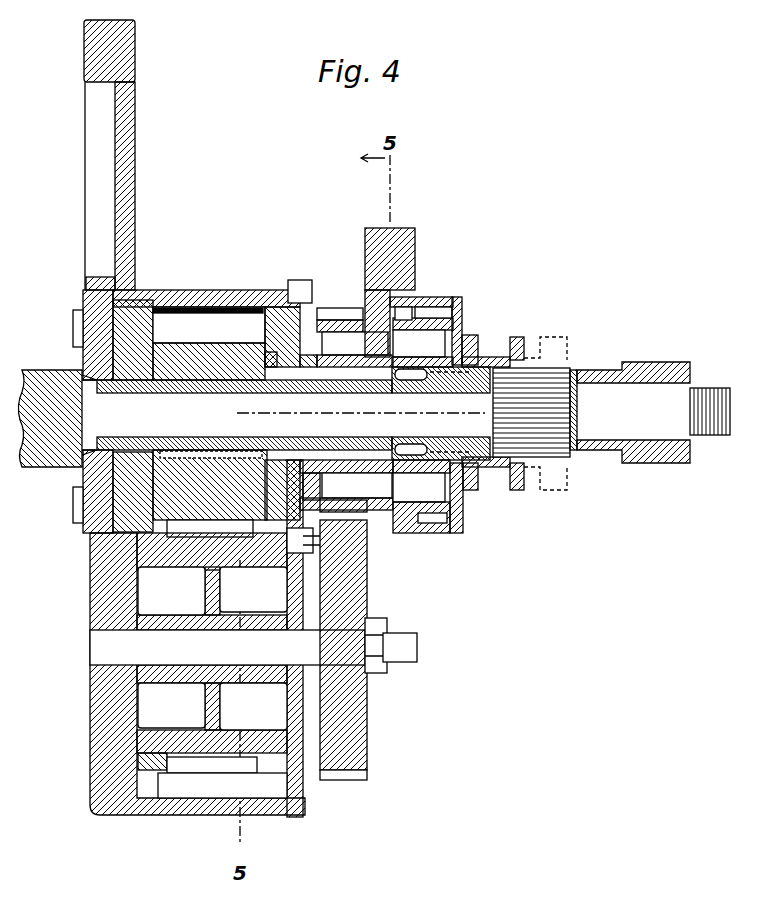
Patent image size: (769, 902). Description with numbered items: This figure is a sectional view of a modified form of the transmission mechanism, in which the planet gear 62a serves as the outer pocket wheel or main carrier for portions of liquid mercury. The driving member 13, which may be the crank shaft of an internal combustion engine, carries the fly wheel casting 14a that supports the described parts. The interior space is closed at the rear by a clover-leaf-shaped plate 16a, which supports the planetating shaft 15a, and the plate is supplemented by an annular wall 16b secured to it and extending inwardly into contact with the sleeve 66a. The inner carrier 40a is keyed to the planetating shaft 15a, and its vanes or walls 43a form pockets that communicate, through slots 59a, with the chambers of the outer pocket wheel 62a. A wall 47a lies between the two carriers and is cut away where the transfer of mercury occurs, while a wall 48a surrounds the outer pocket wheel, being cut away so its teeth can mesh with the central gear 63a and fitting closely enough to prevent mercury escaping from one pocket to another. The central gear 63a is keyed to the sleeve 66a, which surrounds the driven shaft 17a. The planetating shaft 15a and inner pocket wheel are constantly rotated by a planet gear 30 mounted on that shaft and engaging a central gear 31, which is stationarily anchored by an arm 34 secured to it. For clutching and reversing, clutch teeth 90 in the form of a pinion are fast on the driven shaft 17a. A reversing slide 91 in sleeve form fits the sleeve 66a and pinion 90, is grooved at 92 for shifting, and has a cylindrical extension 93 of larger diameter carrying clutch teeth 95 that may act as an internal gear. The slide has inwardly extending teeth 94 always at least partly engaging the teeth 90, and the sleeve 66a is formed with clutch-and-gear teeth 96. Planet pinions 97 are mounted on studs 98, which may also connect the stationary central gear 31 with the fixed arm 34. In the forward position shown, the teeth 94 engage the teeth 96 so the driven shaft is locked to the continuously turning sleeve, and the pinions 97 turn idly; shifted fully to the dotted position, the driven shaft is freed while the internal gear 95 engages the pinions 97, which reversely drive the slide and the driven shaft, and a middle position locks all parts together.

The driving member 13 is at (53, 406).
The fly wheel casting 14a is at (210, 290).
The planetating shaft 15a is at (227, 647).
The clover-leaf-shaped plate 16a is at (293, 790).
The annular wall 16b is at (303, 316).
The driven shaft 17a is at (653, 412).
The planet gear 30 is at (370, 739).
The central gear 31 is at (347, 512).
The arm 34 is at (400, 230).
The inner carrier 40a is at (275, 552).
The vanes or walls 43a is at (148, 743).
The wall 47a is at (90, 550).
The wall 48a is at (198, 808).
The slots 59a is at (192, 568).
The planet gear 62a is at (171, 660).
The central gear 63a is at (207, 465).
The sleeve 66a is at (170, 437).
The clutch teeth 90 is at (543, 460).
The reversing slide 91 is at (524, 339).
The groove 92 is at (502, 352).
The cylindrical extension 93 is at (443, 312).
The teeth 94 is at (480, 372).
The clutch teeth 95 is at (412, 310).
The clutch-and-gear teeth 96 is at (432, 372).
The planet pinions 97 is at (457, 298).
The studs 98 is at (437, 495).